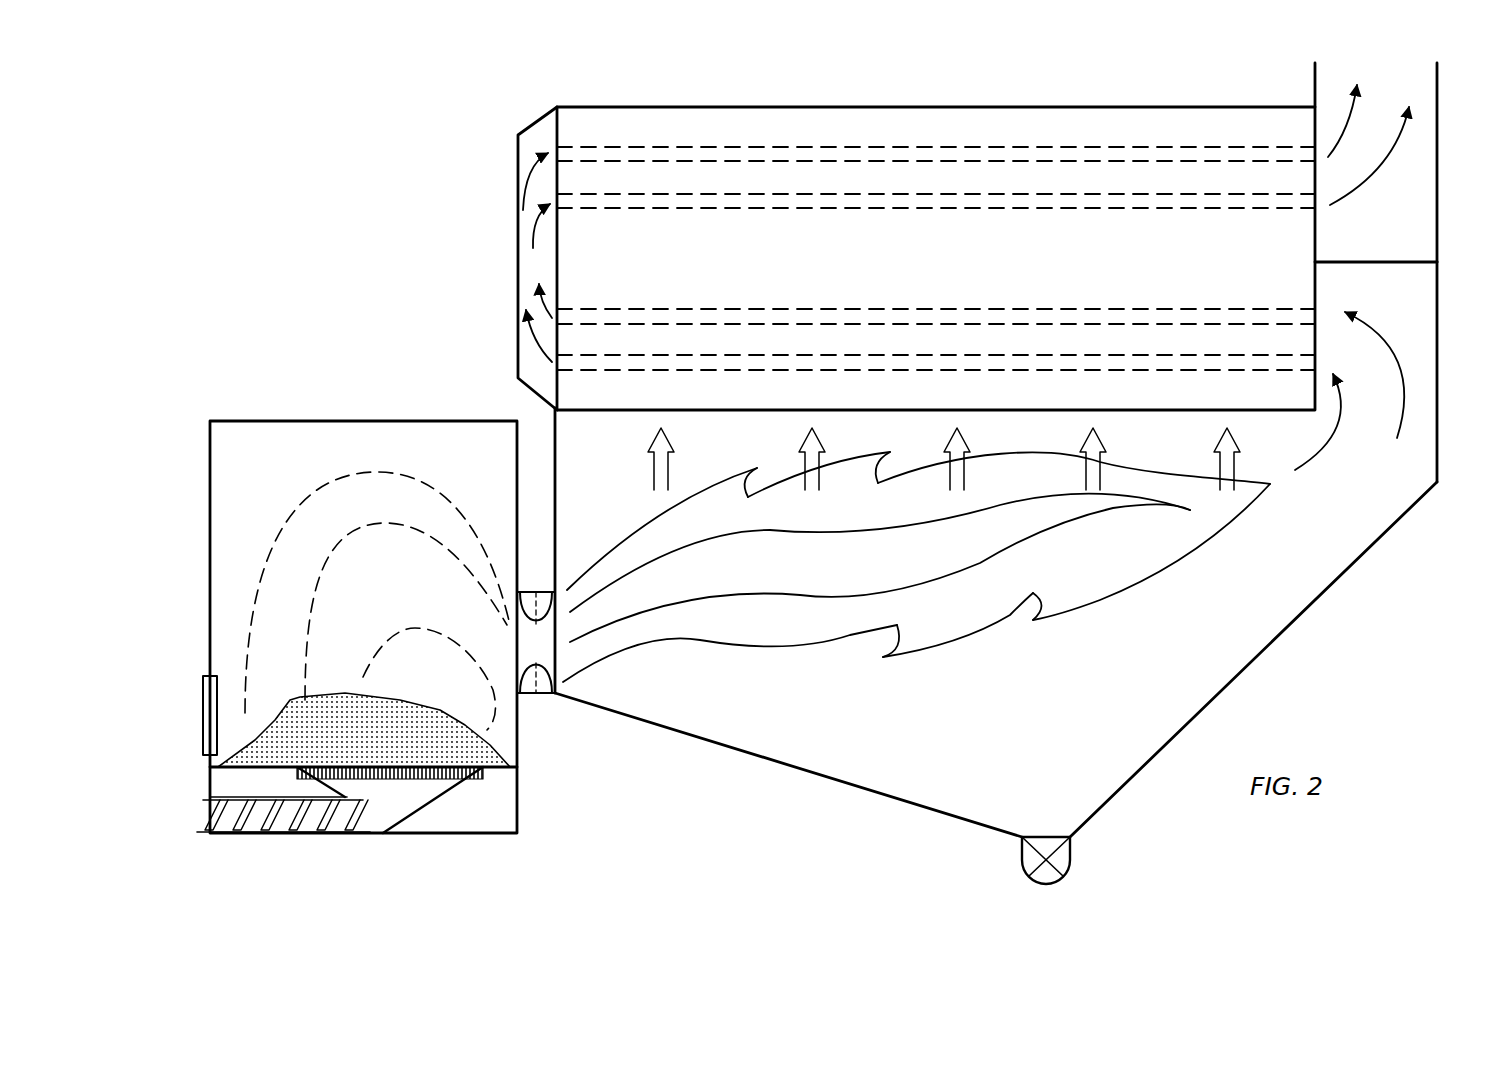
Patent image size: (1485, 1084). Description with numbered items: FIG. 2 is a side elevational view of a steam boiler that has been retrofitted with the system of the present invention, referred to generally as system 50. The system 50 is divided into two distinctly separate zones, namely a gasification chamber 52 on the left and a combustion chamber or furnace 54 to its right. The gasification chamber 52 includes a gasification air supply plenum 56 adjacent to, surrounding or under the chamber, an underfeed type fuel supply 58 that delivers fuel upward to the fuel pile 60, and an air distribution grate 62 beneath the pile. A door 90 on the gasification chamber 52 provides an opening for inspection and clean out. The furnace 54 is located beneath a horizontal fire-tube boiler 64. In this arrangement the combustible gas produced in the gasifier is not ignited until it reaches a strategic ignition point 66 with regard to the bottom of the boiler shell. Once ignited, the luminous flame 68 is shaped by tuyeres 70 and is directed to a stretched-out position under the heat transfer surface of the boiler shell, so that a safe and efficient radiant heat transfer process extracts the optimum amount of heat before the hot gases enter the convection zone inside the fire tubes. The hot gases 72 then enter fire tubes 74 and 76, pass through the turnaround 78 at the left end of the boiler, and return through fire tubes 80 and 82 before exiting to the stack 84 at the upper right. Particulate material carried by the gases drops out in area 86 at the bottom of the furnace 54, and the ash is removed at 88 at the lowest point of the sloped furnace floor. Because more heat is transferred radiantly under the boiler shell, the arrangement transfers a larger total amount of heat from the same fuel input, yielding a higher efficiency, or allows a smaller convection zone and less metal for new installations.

The system 50 is at (408, 326).
The gasification chamber 52 is at (382, 589).
The combustion chamber or furnace 54 is at (810, 712).
The gasification air supply plenum 56 is at (492, 813).
The underfeed type fuel supply 58 is at (263, 826).
The fuel pile 60 is at (420, 717).
The air distribution grate 62 is at (438, 781).
The horizontal fire-tube boiler 64 is at (892, 274).
The ignition point 66 is at (543, 655).
The luminous flame 68 is at (1188, 548).
The tuyeres 70 is at (540, 680).
The hot gases 72 is at (1375, 482).
The fire tube 74 is at (1116, 310).
The fire tube 76 is at (1136, 372).
The turnaround 78 is at (522, 247).
The fire tube 80 is at (1041, 148).
The fire tube 82 is at (925, 210).
The stack 84 is at (1405, 96).
The area 86 is at (1060, 766).
The ash removal 88 is at (1063, 858).
The door 90 is at (212, 710).